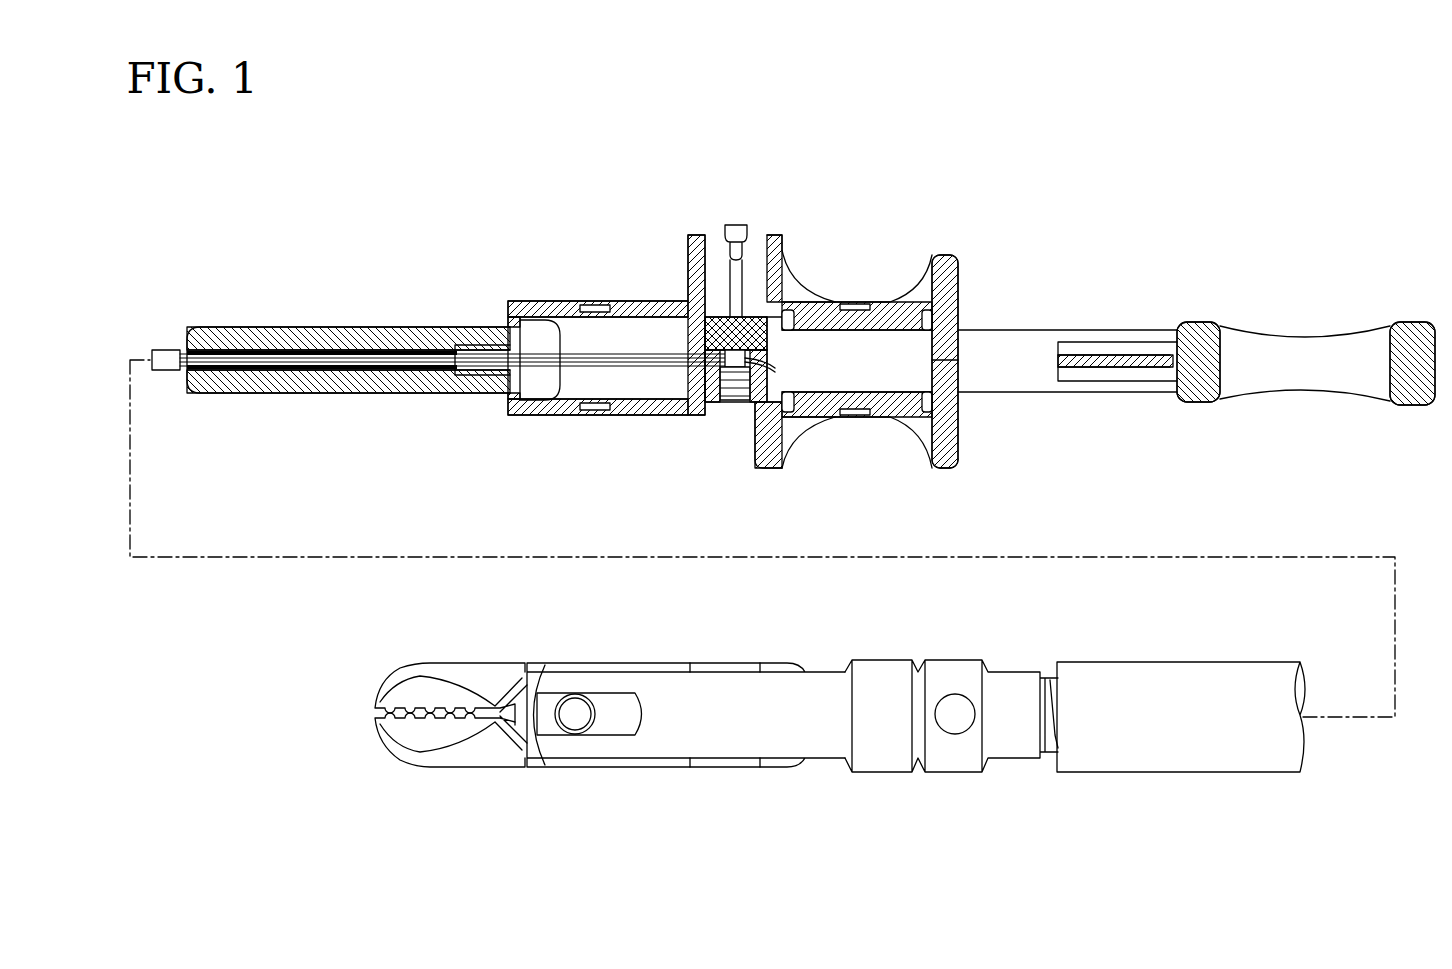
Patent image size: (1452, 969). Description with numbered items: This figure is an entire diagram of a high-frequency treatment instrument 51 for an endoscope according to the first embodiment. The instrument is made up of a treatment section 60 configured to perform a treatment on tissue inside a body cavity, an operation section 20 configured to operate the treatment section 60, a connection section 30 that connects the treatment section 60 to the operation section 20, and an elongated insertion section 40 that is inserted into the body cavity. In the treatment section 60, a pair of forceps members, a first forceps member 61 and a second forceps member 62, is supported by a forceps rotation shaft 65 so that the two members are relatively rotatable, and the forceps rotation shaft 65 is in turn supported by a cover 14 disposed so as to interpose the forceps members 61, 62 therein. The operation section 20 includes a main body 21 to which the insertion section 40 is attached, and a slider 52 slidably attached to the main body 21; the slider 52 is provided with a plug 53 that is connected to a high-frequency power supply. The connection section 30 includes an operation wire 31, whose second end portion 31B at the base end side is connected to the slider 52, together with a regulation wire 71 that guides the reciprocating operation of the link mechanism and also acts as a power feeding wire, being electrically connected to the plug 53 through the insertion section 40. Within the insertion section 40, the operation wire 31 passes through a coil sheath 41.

The high-frequency treatment instrument 51 is at (1050, 155).
The operation section 20 is at (652, 240).
The main body 21 is at (487, 300).
The coil sheath 41 is at (168, 352).
The regulation wire 71 is at (636, 358).
The plug 53 is at (735, 223).
The slider 52 is at (780, 247).
The operation wire 31 is at (680, 362).
The connection section 30 is at (792, 780).
The second end portion 31B is at (757, 362).
The second forceps member 62 is at (490, 668).
The first forceps member 61 is at (452, 765).
The treatment section 60 is at (565, 655).
The forceps rotation shaft 65 is at (570, 722).
The cover 14 is at (722, 740).
The insertion section 40 is at (1265, 778).